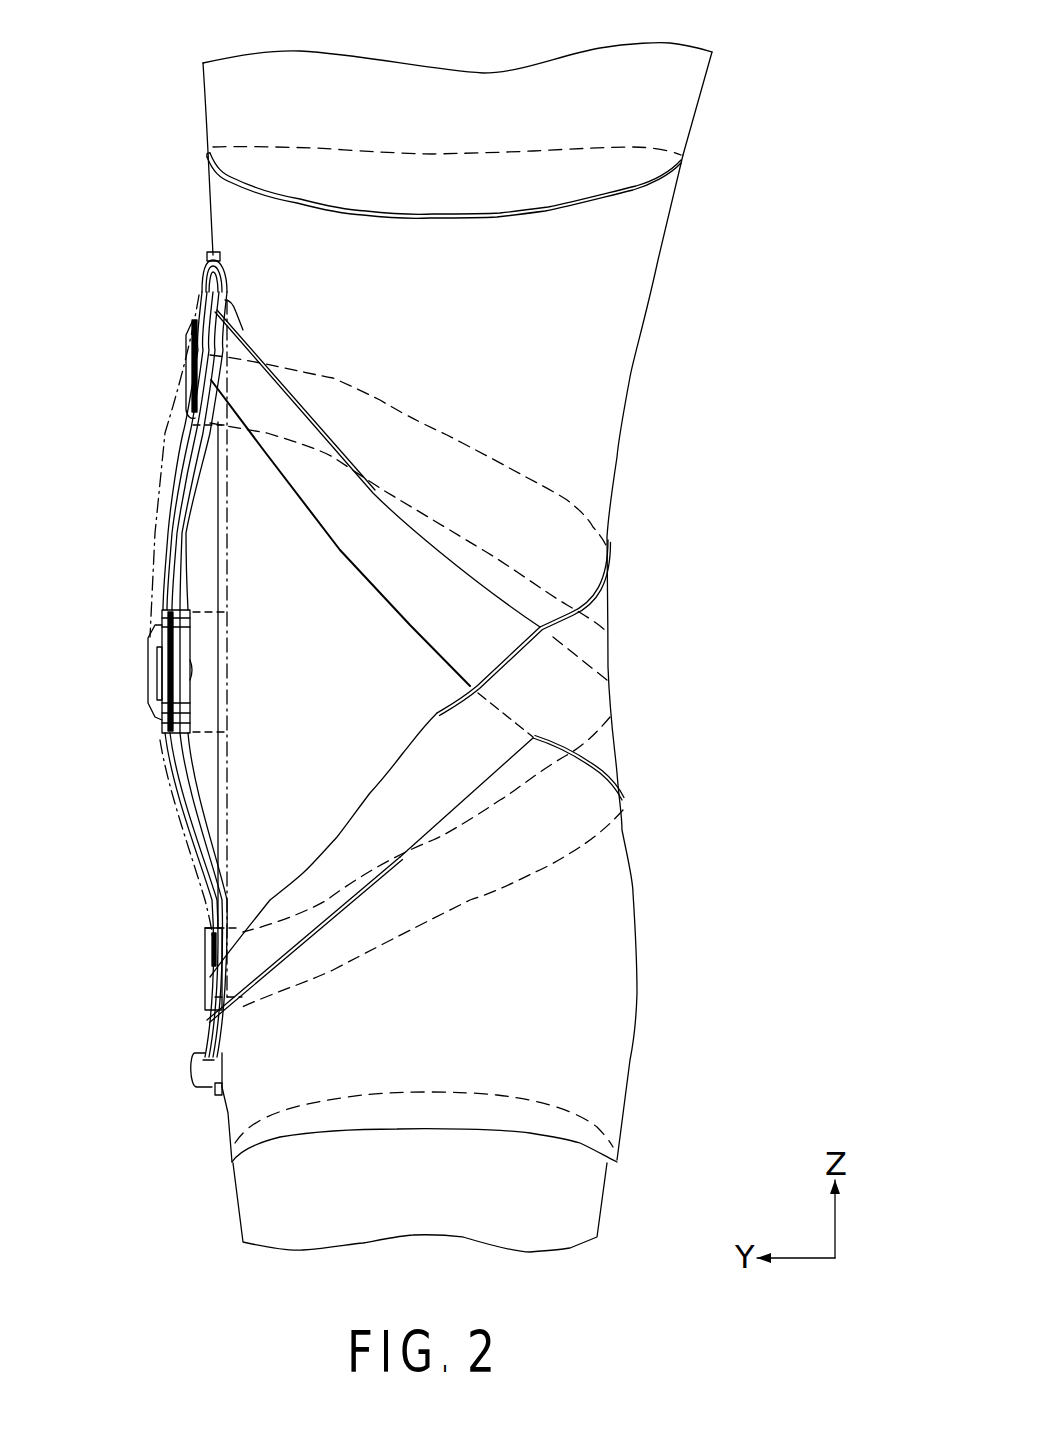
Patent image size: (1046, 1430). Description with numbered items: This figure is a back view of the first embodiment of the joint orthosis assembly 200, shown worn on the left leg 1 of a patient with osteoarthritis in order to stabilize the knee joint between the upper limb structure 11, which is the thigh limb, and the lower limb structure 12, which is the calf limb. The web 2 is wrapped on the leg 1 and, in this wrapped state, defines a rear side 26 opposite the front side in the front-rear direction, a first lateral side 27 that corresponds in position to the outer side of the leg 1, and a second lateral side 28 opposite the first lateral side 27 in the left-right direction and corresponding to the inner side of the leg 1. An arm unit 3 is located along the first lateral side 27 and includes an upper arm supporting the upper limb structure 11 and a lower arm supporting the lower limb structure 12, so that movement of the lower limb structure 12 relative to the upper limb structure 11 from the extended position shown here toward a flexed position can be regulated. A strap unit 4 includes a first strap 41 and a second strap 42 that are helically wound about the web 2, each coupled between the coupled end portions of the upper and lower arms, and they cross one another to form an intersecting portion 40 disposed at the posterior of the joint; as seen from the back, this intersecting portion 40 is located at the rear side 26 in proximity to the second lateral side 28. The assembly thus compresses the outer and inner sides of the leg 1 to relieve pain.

The left leg 1 is at (200, 70).
The upper limb structure 11 is at (207, 100).
The lower limb structure 12 is at (257, 1217).
The web 2 is at (210, 182).
The joint orthosis assembly 200 is at (317, 173).
The rear side 26 is at (430, 248).
The first lateral side 27 is at (207, 240).
The second lateral side 28 is at (663, 258).
The arm unit 3 is at (157, 615).
The strap unit 4 is at (633, 592).
The intersecting portion 40 is at (540, 693).
The first strap 41 is at (597, 643).
The second strap 42 is at (597, 753).